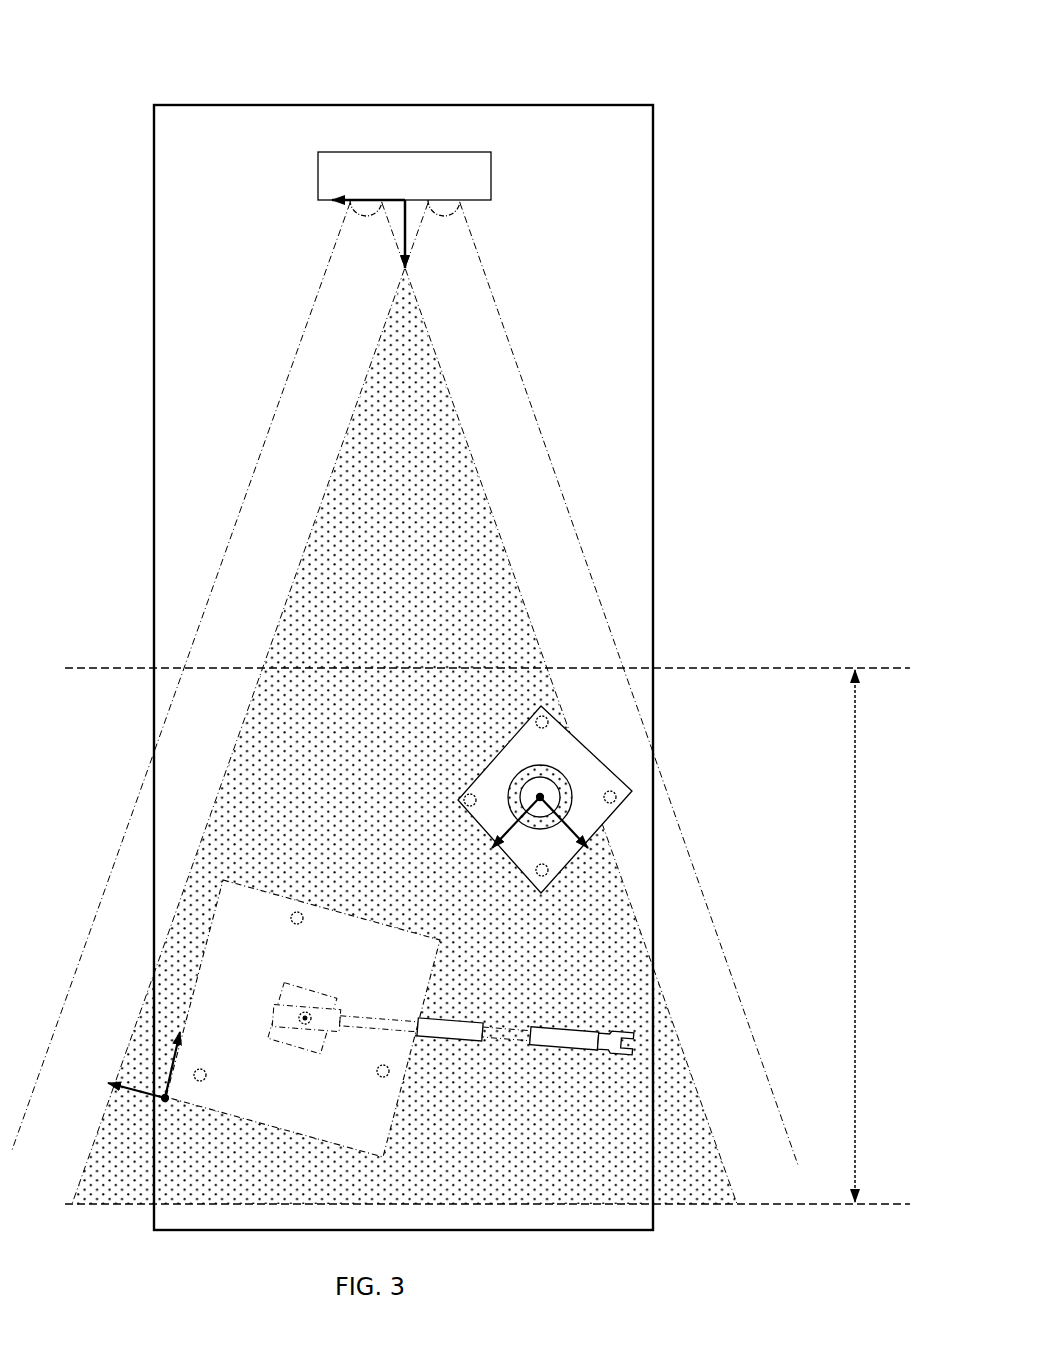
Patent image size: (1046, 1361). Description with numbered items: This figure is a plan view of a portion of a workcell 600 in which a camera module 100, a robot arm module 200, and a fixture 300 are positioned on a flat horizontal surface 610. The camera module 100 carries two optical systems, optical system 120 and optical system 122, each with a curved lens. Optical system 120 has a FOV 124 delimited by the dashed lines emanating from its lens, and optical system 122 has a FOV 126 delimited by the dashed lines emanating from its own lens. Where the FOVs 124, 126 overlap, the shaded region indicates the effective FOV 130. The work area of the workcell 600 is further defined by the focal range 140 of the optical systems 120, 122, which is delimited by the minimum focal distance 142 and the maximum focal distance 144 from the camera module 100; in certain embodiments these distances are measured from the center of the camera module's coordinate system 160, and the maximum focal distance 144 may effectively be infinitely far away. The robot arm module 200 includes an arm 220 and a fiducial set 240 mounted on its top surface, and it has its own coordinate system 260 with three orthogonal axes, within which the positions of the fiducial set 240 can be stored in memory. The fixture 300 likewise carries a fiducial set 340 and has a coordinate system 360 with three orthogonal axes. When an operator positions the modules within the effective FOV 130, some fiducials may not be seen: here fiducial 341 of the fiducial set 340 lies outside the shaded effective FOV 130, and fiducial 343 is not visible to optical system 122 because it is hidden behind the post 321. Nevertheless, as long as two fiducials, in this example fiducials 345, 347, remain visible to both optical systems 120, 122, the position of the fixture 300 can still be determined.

The workcell 600 is at (369, 625).
The flat horizontal surface 610 is at (178, 340).
The camera module 100 is at (405, 659).
The optical system 120 is at (367, 186).
The optical system 122 is at (440, 186).
The FOV 124 is at (367, 235).
The FOV 126 is at (443, 233).
The coordinate system 160 is at (415, 229).
The effective FOV 130 is at (370, 520).
The focal range 140 is at (852, 760).
The minimum focal distance 142 is at (782, 666).
The maximum focal distance 144 is at (790, 1202).
The fixture 300 is at (537, 814).
The post 321 is at (518, 778).
The fiducial set 340 is at (537, 817).
The fiducial 341 is at (618, 795).
The fiducial 343 is at (535, 876).
The fiducial 345 is at (553, 712).
The fiducial 347 is at (452, 801).
The coordinate system 360 is at (572, 852).
The robot arm module 200 is at (368, 1012).
The arm 220 is at (520, 1068).
The fiducial set 240 is at (297, 910).
The coordinate system 260 is at (150, 1098).